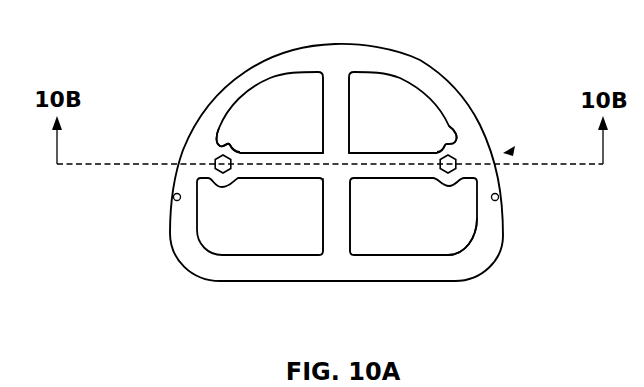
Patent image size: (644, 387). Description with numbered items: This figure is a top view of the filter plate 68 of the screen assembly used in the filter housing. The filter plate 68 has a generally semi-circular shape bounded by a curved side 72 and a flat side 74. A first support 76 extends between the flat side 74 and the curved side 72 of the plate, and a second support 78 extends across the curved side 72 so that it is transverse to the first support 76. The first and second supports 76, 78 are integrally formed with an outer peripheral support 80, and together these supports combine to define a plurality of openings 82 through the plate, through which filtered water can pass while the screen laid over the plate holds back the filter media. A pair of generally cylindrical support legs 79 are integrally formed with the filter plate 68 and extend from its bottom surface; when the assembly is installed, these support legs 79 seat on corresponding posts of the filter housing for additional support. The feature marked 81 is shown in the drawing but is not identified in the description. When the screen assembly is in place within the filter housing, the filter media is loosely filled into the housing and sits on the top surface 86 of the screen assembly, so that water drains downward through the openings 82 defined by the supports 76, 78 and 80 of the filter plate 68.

The filter plate 68 is at (512, 151).
The curved side 72 is at (228, 86).
The flat side 74 is at (261, 283).
The first support 76 is at (333, 103).
The second support 78 is at (216, 160).
The support legs 79 is at (225, 133).
The outer peripheral support 80 is at (437, 267).
The aperture 81 is at (174, 198).
The openings 82 is at (337, 163).
The top surface 86 is at (477, 243).